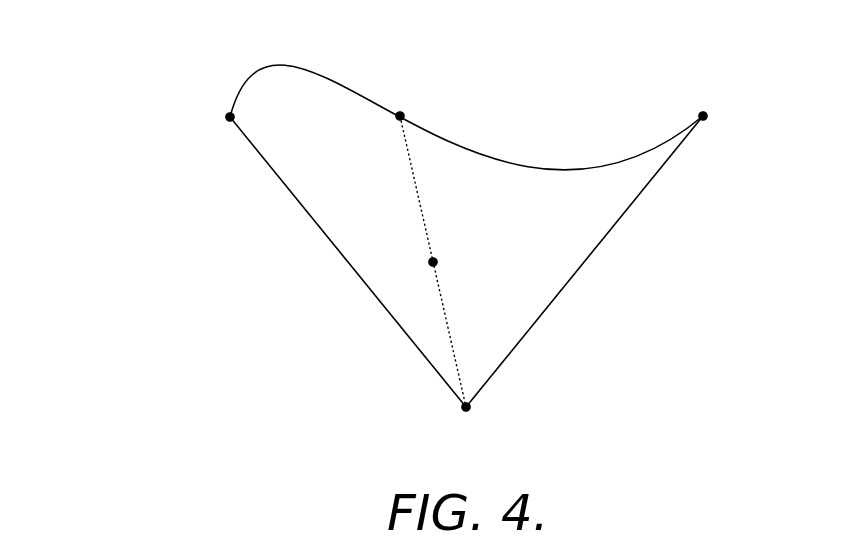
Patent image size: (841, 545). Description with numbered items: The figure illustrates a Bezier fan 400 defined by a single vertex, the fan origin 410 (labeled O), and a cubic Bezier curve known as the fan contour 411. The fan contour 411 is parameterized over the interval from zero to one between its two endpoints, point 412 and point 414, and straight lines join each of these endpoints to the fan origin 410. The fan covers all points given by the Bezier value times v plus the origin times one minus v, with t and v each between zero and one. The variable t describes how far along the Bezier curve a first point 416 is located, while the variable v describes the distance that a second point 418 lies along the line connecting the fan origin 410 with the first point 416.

The Bezier fan 400 is at (88, 78).
The fan contour 411 is at (334, 207).
The Bezier start point 412 is at (228, 120).
The Bezier end point 414 is at (700, 112).
The first point 416 is at (396, 119).
The second point 418 is at (430, 261).
The fan origin 410 is at (470, 408).